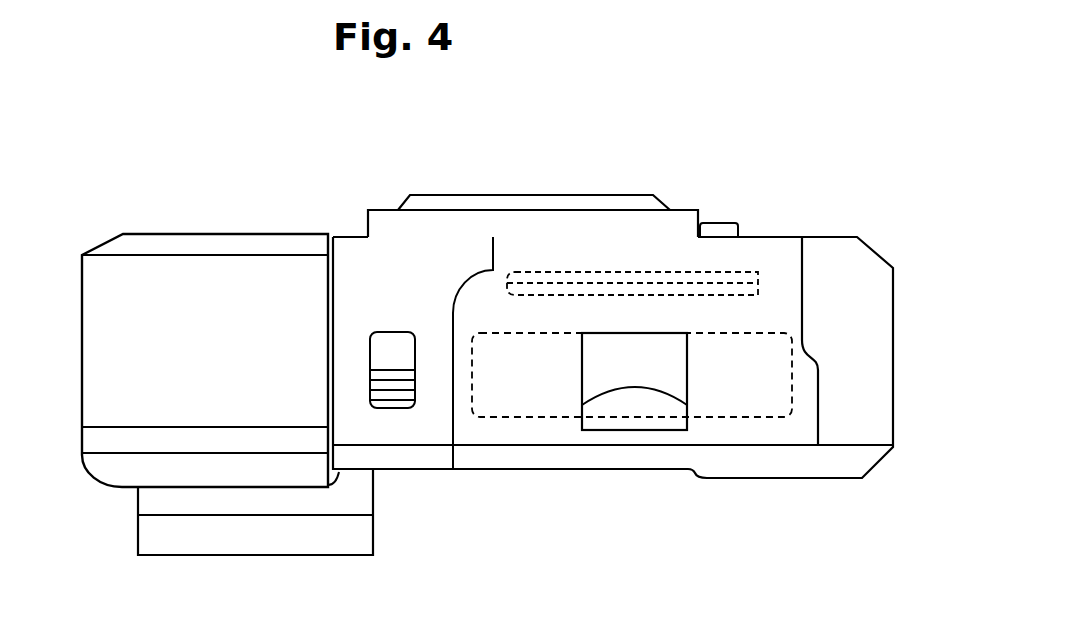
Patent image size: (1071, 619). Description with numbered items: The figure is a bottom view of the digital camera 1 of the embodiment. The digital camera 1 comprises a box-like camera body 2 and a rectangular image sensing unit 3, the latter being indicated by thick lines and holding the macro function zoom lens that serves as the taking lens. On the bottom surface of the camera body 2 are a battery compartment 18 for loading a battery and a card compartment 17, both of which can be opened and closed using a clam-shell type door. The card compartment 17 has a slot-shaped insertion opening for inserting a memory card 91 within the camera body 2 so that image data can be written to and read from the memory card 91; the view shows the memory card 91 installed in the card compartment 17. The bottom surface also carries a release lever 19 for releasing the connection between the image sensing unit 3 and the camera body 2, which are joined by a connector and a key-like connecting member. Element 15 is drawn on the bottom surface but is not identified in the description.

The digital camera 1 is at (296, 130).
The camera body 2 is at (558, 168).
The image sensing unit 3 is at (176, 220).
The cover member 15 is at (806, 392).
The card compartment 17 is at (545, 270).
The battery compartment 18 is at (724, 402).
The release lever 19 is at (417, 360).
The memory card 91 is at (645, 270).